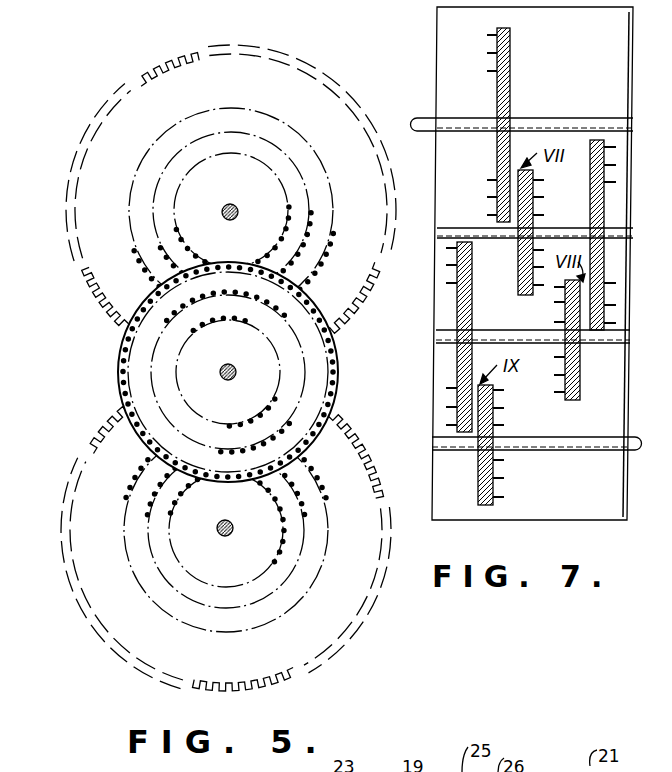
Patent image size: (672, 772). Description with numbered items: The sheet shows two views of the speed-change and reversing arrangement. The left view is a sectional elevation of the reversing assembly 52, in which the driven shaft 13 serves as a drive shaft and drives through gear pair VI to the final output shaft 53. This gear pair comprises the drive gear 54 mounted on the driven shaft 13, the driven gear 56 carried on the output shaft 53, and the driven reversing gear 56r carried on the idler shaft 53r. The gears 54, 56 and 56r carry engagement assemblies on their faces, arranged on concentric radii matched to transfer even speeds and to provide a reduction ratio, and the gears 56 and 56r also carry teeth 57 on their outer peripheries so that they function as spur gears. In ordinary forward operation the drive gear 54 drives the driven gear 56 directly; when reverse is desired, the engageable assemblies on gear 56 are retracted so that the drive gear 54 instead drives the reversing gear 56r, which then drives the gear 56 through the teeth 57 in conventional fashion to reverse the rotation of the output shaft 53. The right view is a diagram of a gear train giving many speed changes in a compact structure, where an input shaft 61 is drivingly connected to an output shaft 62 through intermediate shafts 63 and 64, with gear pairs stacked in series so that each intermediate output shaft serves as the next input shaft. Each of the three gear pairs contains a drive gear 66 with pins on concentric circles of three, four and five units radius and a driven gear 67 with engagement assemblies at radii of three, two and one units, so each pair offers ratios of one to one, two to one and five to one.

In FIG. 5, the driven shaft 13 is at (221, 373).
In FIG. 5, the reversing assembly 52 is at (93, 403).
In FIG. 5, the output shaft 53 is at (232, 529).
In FIG. 5, the idler shaft 53r is at (230, 204).
In FIG. 5, the drive gear 54 is at (152, 442).
In FIG. 5, the driven gear 56 is at (79, 589).
In FIG. 5, the driven reversing gear 56r is at (78, 237).
In FIG. 5, the teeth 57 is at (106, 318).
In FIG. 7, the input shaft 61 is at (420, 118).
In FIG. 7, the output shaft 62 is at (612, 451).
In FIG. 7, the intermediate shaft 63 is at (465, 228).
In FIG. 7, the intermediate shaft 64 is at (436, 333).
In FIG. 7, the drive gear 66 is at (511, 102).
In FIG. 7, the driven gear 67 is at (535, 223).